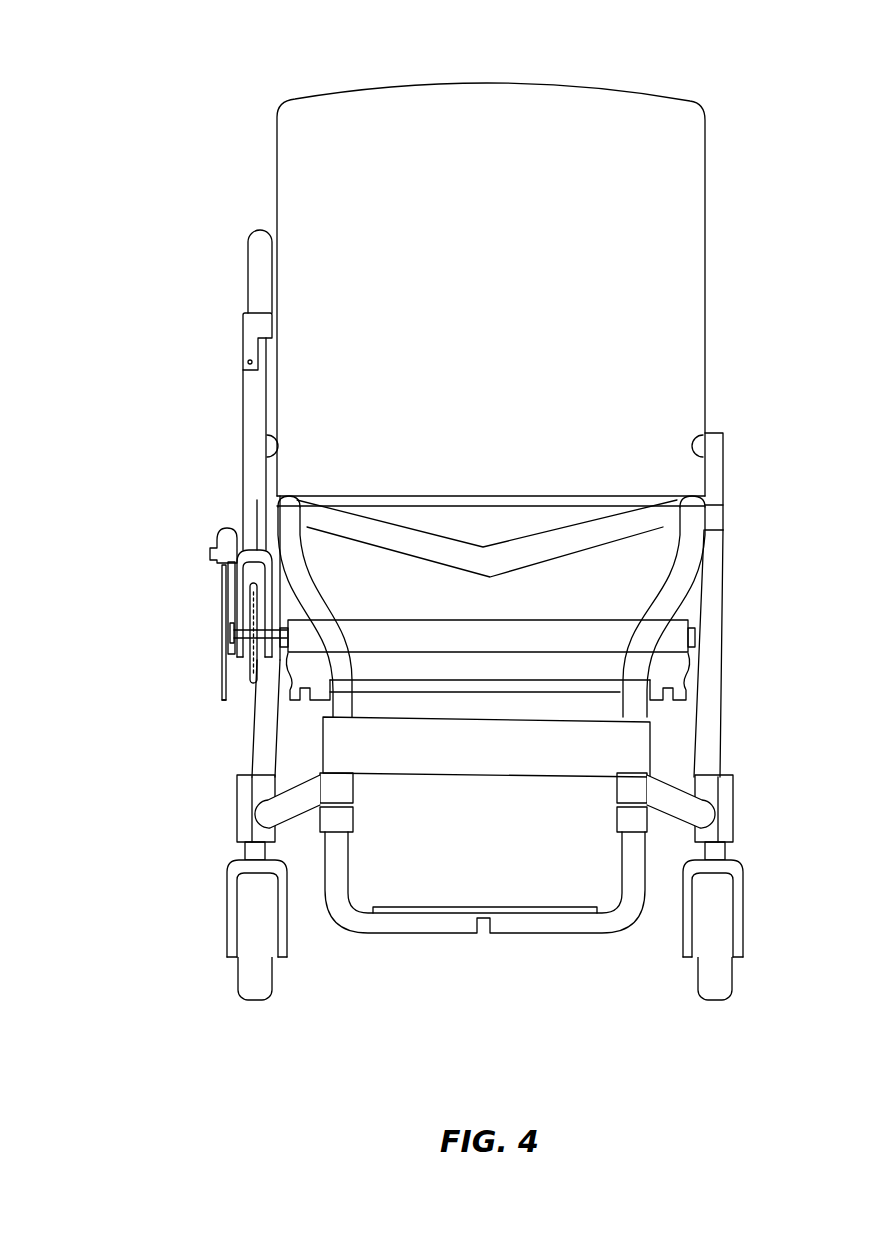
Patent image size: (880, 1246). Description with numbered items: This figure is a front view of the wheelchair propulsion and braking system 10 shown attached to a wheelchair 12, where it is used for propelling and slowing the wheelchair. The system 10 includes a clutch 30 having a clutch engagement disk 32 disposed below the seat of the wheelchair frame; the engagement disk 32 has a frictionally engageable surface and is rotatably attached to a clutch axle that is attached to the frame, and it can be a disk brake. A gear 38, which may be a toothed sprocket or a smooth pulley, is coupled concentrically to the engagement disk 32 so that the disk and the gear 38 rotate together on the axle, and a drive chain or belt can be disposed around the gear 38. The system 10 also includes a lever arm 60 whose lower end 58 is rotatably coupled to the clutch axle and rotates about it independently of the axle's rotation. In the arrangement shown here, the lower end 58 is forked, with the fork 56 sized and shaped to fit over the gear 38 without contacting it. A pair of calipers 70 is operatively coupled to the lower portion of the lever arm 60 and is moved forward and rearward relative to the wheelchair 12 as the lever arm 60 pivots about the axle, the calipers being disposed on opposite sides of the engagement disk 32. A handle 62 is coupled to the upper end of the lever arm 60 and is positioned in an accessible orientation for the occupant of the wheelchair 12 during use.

The wheelchair propulsion and braking system 10 is at (150, 495).
The wheelchair 12 is at (718, 100).
The clutch 30 is at (200, 618).
The clutch engagement disk 32 is at (218, 673).
The gear 38 is at (253, 683).
The fork 56 is at (233, 590).
The lower end of the lever arm 58 is at (253, 542).
The lever arm 60 is at (248, 395).
The handle 62 is at (255, 252).
The pair of calipers 70 is at (200, 550).